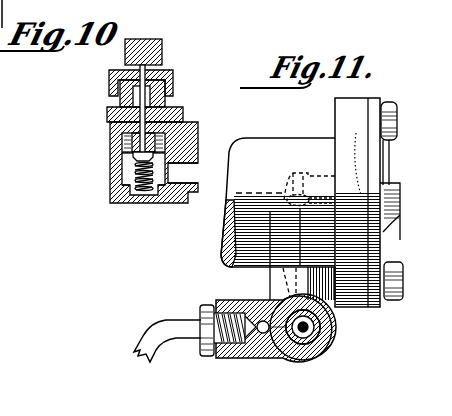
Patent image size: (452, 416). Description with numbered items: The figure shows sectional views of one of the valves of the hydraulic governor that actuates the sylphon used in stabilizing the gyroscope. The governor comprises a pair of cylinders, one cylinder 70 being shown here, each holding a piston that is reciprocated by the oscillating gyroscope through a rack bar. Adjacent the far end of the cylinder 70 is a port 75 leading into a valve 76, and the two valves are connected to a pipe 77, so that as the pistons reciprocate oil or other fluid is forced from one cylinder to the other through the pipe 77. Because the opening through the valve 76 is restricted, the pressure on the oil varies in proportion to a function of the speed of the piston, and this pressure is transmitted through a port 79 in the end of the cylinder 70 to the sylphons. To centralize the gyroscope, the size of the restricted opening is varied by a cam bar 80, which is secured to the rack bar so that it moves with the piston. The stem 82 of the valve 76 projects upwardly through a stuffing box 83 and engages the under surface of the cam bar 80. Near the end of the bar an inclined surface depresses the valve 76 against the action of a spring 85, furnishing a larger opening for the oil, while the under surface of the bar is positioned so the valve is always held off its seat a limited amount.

In FIG. 11, the cylinder 70 is at (300, 202).
In FIG. 10, the port 75 is at (187, 173).
In FIG. 10, the valve 76 is at (131, 155).
In FIG. 11, the valve 76 is at (334, 326).
In FIG. 11, the pipe 77 is at (165, 328).
In FIG. 11, the port 79 is at (390, 180).
In FIG. 10, the cam bar 80 is at (167, 33).
In FIG. 10, the stem 82 is at (165, 72).
In FIG. 11, the stem 82 is at (306, 331).
In FIG. 10, the stuffing box 83 is at (112, 83).
In FIG. 10, the spring 85 is at (134, 170).